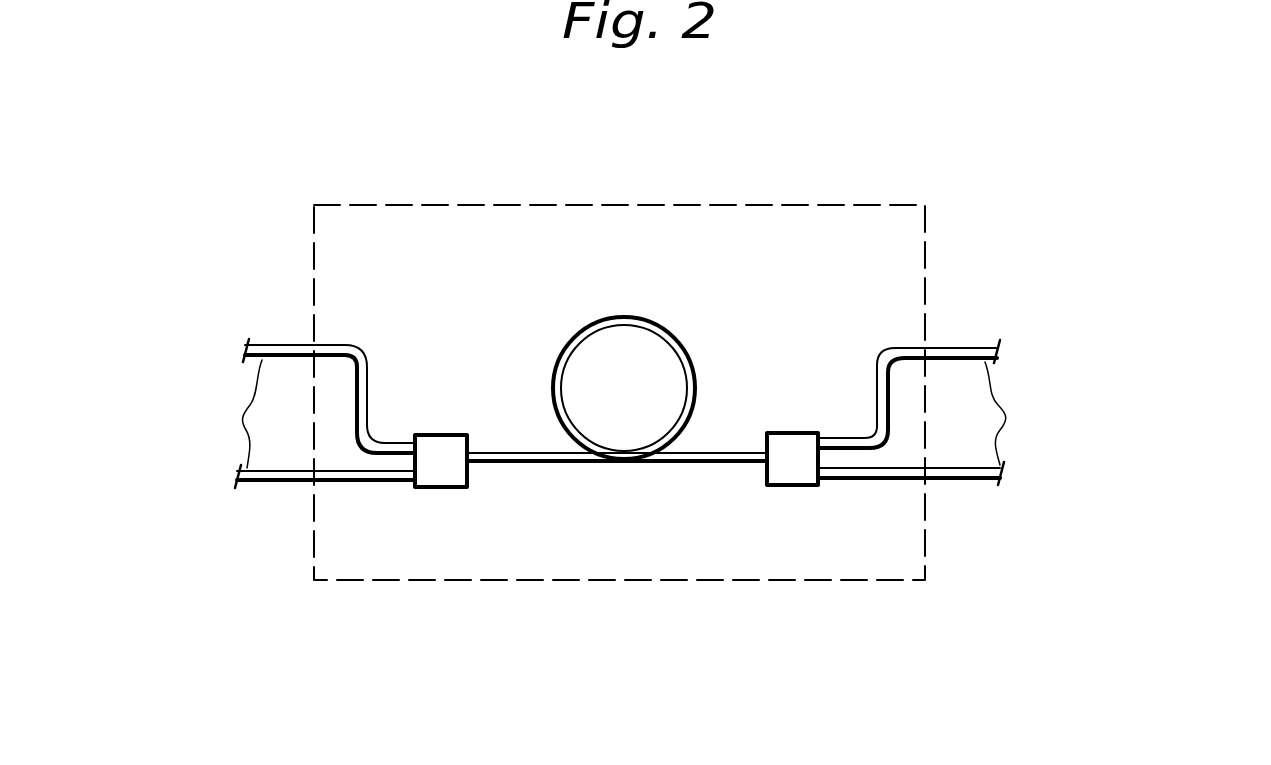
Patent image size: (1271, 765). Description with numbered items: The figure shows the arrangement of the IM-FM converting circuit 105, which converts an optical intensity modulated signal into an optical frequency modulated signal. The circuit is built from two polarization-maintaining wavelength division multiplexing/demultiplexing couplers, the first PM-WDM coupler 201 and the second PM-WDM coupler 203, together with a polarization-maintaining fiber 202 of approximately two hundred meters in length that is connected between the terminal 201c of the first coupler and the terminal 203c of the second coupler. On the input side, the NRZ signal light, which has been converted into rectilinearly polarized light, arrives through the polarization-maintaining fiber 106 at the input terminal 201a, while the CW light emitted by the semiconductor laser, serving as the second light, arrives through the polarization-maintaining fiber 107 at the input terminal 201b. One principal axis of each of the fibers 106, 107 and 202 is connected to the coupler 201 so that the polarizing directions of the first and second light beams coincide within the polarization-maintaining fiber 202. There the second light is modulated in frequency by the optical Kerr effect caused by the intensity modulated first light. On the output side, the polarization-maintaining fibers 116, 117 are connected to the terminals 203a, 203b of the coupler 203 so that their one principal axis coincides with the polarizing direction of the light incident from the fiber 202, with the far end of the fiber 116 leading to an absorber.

The IM-FM converting circuit 105 is at (540, 205).
The polarization-maintaining fiber 106 is at (333, 345).
The polarization-maintaining fiber 107 is at (333, 482).
The polarization-maintaining fiber 116 is at (928, 348).
The polarization-maintaining fiber 117 is at (912, 480).
The PM-WDM coupler 201 is at (455, 487).
The input terminal 201a is at (412, 437).
The input terminal 201b is at (413, 487).
The terminal 201c is at (468, 445).
The polarization-maintaining fiber 202 is at (687, 352).
The PM-WDM coupler 203 is at (793, 485).
The terminal 203a is at (826, 433).
The terminal 203b is at (818, 485).
The terminal 203c is at (760, 472).